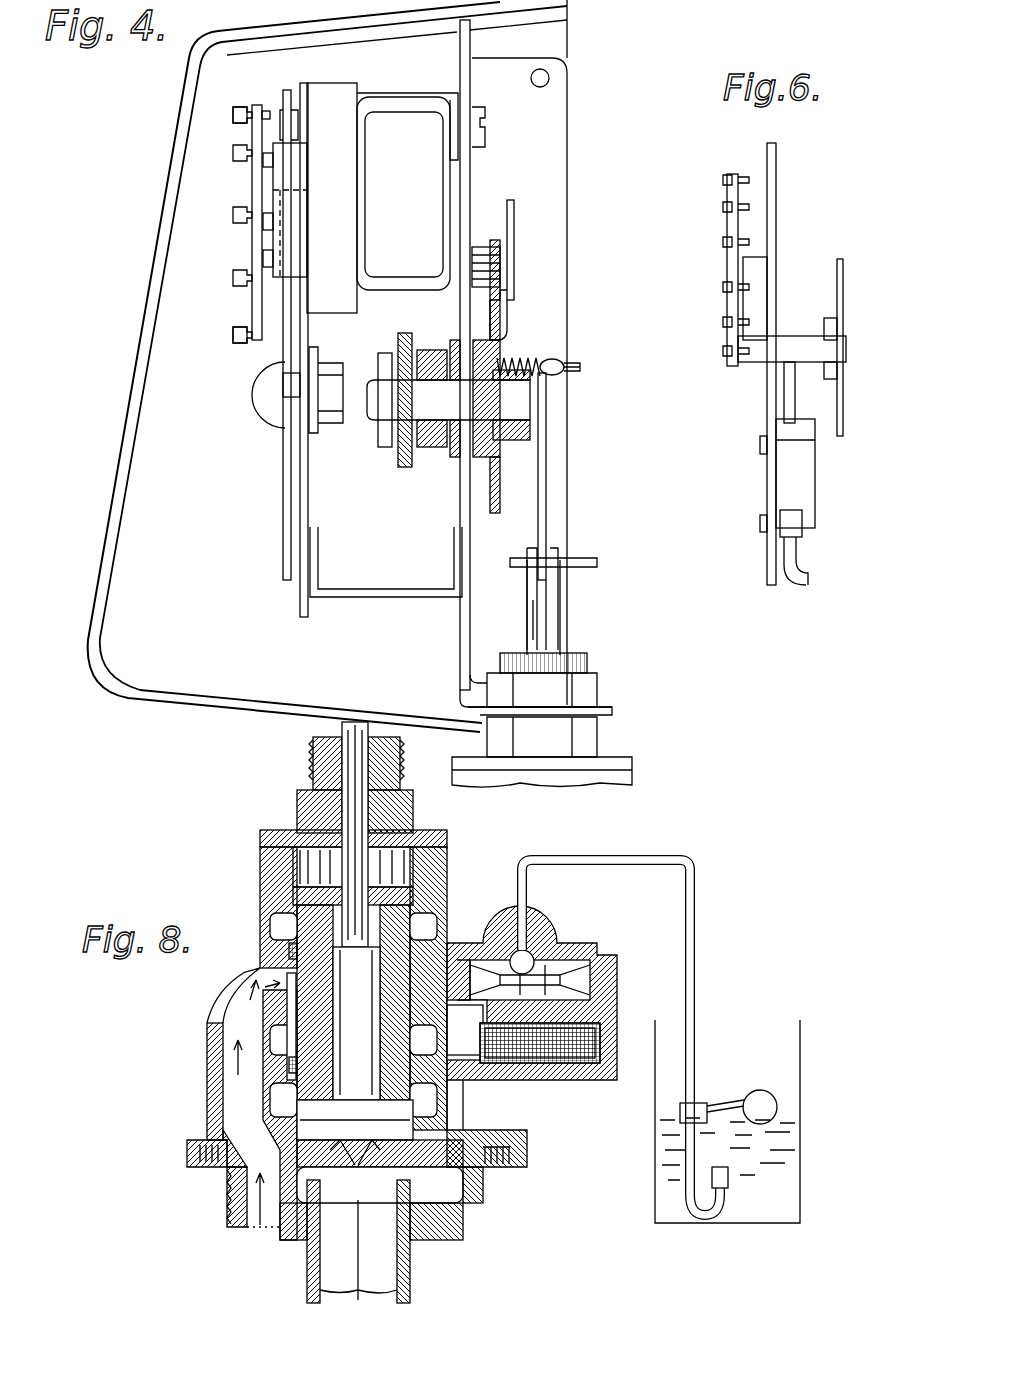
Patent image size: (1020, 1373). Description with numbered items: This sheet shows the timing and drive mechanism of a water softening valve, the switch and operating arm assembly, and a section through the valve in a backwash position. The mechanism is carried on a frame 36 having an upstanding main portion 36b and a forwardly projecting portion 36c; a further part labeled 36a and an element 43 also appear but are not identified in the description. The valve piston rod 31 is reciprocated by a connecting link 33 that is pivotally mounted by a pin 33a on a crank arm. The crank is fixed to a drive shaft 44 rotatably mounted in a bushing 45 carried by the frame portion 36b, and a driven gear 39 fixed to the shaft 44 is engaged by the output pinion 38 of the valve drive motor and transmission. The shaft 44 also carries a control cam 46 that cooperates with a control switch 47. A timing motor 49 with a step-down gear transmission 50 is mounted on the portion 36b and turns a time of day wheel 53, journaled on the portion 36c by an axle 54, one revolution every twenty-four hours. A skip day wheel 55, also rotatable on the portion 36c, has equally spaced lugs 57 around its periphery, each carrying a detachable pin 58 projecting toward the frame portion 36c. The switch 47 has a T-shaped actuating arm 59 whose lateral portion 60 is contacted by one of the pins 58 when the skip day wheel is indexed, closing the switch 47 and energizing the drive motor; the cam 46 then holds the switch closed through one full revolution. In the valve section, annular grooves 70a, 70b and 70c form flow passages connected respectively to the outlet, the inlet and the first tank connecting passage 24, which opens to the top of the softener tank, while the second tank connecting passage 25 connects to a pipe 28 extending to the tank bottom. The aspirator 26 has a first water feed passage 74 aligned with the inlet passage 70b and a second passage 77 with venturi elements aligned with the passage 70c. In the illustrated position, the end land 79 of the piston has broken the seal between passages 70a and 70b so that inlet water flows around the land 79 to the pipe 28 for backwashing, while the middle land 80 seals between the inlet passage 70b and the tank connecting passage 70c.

In FIG. 4, the frame 36 is at (493, 19).
In FIG. 4, the bracket foot plate 36a is at (614, 712).
In FIG. 4, the upstanding main portion of the frame 36b is at (460, 640).
In FIG. 4, the forwardly projecting portion of the frame 36c is at (300, 530).
In FIG. 4, the output pinion 38 is at (478, 247).
In FIG. 4, the rod 43 is at (514, 250).
In FIG. 4, the pin 33a is at (548, 368).
In FIG. 4, the connecting link 33 is at (546, 505).
In FIG. 4, the piston rod 31 is at (548, 630).
In FIG. 4, the driven gear 39 is at (498, 540).
In FIG. 4, the drive shaft 44 is at (470, 412).
In FIG. 4, the bushing 45 is at (427, 350).
In FIG. 4, the control cam 46 is at (403, 467).
In FIG. 6, the control cam 46 is at (843, 265).
In FIG. 6, the control switch 47 is at (812, 480).
In FIG. 4, the timing motor 49 is at (404, 184).
In FIG. 4, the step-down gear transmission 50 is at (340, 224).
In FIG. 4, the time of day wheel 53 is at (284, 495).
In FIG. 4, the axle 54 is at (290, 390).
In FIG. 4, the skip day wheel 55 is at (252, 180).
In FIG. 6, the skip day wheel 55 is at (727, 212).
In FIG. 4, the lugs 57 is at (250, 333).
In FIG. 4, the detachable pin 58 is at (247, 342).
In FIG. 6, the detachable pin 58 is at (723, 322).
In FIG. 6, the actuating arm 59 is at (784, 395).
In FIG. 6, the lateral arm portion 60 is at (735, 365).
In FIG. 8, the outlet passage groove 70a is at (262, 1100).
In FIG. 8, the inlet passage groove 70b is at (452, 1082).
In FIG. 8, the tank connecting passage groove 70c is at (258, 975).
In FIG. 8, the first water feed passage 74 is at (522, 1065).
In FIG. 8, the second passage 77 is at (455, 955).
In FIG. 8, the end sealing land 79 is at (357, 1118).
In FIG. 8, the middle sealing land 80 is at (356, 911).
In FIG. 8, the first tank connecting passage 24 is at (250, 1230).
In FIG. 8, the second tank connecting passage 25 is at (444, 1202).
In FIG. 8, the aspirator 26 is at (552, 1075).
In FIG. 8, the pipe 28 is at (410, 1285).